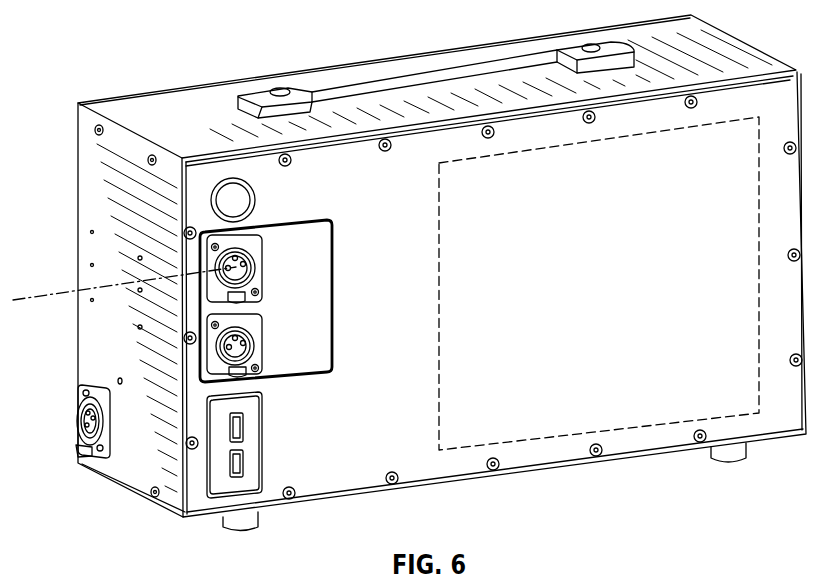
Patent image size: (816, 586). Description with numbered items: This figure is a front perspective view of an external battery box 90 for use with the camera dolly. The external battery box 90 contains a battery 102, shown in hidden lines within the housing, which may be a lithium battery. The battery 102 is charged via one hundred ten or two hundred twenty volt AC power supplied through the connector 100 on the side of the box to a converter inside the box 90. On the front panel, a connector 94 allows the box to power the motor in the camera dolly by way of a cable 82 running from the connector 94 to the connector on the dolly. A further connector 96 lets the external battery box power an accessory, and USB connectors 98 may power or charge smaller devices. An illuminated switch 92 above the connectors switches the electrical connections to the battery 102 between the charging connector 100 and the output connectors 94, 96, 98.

The cable 82 is at (55, 292).
The external battery box 90 is at (383, 58).
The illuminated switch 92 is at (238, 200).
The connector 94 is at (252, 270).
The connector 96 is at (255, 341).
The USB connectors 98 is at (245, 424).
The connector 100 is at (76, 427).
The battery 102 is at (604, 424).